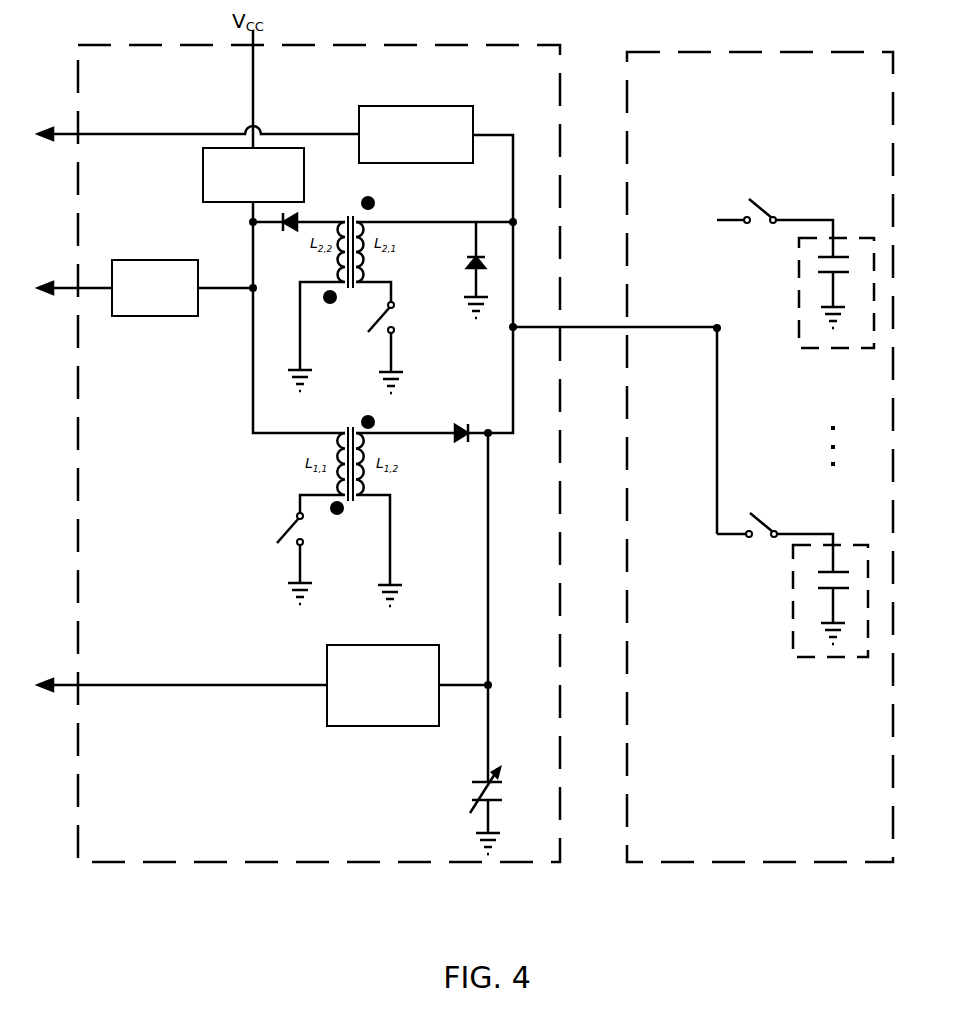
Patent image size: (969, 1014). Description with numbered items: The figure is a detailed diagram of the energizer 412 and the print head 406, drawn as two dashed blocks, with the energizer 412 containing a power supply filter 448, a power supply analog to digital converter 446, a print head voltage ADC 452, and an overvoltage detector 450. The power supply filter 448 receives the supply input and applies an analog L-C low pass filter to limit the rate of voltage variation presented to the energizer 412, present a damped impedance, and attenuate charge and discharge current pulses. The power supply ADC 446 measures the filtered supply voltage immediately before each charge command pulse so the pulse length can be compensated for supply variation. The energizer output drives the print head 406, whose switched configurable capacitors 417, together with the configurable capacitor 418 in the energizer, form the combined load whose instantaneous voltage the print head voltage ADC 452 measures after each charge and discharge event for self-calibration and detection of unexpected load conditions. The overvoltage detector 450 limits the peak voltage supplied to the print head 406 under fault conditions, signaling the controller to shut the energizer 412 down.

The print head 406 is at (755, 862).
The energizer 412 is at (198, 862).
The configurable capacitors 417 is at (812, 272).
The configurable capacitor 418 is at (465, 790).
The power supply analog to digital converter 446 is at (177, 259).
The power supply filter 448 is at (203, 175).
The overvoltage detector 450 is at (419, 106).
The print head voltage ADC 452 is at (325, 665).